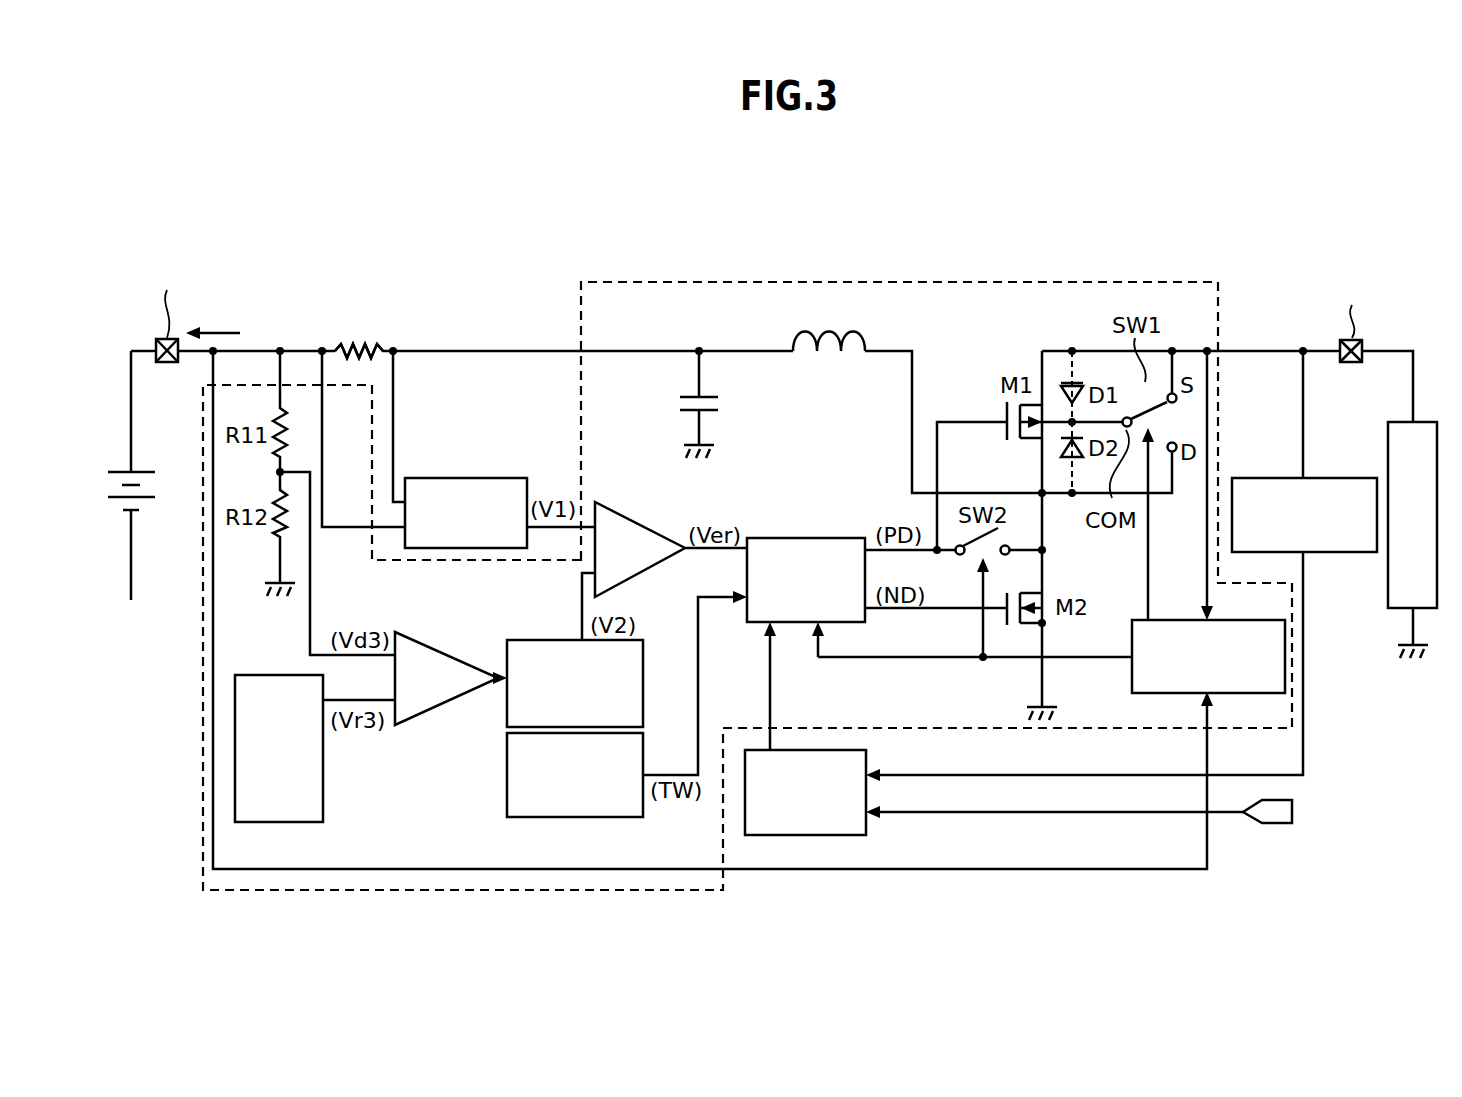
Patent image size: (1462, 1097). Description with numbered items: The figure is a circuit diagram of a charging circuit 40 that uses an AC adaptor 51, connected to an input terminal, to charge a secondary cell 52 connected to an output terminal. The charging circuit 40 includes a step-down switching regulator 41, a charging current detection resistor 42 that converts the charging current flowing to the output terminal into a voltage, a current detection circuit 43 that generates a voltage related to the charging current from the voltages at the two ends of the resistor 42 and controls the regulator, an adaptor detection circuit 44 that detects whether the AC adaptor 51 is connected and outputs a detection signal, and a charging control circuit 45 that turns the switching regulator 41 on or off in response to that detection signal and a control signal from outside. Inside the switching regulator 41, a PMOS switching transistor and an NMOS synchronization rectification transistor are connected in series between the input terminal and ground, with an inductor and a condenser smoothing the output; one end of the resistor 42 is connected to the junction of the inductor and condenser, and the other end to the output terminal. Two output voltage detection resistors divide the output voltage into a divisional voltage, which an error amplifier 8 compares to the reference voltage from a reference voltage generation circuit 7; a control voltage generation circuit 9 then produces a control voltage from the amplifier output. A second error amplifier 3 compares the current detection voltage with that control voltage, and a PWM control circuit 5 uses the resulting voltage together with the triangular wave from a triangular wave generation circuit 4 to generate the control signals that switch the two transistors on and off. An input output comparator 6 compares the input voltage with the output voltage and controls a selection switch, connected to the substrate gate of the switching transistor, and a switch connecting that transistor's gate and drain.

The charging circuit 40 is at (970, 196).
The step-down switching regulator 41 is at (1040, 279).
The charging current detection resistor 42 is at (359, 335).
The current detection circuit 43 is at (462, 478).
The adaptor detection circuit 44 is at (1337, 478).
The charging control circuit 45 is at (866, 758).
The AC adaptor 51 is at (1422, 420).
The secondary cell 52 is at (115, 468).
The error amplifier 3 is at (630, 503).
The triangular wave generation circuit 4 is at (507, 777).
The PWM control circuit 5 is at (808, 538).
The input output comparator 6 is at (1132, 685).
The reference voltage generation circuit 7 is at (323, 802).
The error amplifier 8 is at (440, 652).
The control voltage generation circuit 9 is at (545, 640).